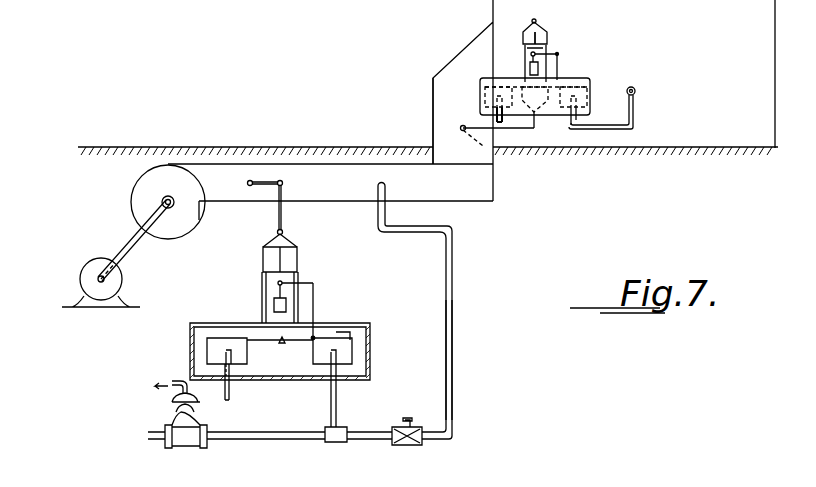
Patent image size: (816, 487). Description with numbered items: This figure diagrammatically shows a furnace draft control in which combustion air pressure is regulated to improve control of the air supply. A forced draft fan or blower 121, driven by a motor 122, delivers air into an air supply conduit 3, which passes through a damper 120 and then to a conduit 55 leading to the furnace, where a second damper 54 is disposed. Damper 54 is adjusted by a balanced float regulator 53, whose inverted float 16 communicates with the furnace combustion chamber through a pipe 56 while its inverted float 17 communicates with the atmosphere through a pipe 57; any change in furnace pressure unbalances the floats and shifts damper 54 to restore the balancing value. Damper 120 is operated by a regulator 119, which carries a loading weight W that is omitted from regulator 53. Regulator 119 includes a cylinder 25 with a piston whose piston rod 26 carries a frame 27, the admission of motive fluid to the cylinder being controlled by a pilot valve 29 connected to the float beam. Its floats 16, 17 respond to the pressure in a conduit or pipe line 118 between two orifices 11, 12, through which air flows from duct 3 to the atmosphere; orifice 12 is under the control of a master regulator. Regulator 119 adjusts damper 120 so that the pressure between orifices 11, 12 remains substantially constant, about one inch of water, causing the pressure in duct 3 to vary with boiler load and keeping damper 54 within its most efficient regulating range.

The air supply conduit 3 is at (357, 193).
The orifice 11 is at (414, 466).
The orifice 12 is at (152, 424).
The inverted float or bell 16 is at (352, 350).
The inverted float or bell 17 is at (207, 345).
The cylinder 25 is at (270, 291).
The piston rod 26 is at (282, 259).
The frame 27 is at (263, 262).
The pilot valve 29 is at (274, 308).
The balanced float regulator 53 is at (594, 60).
The damper 54 is at (445, 122).
The conduit 55 is at (433, 90).
The pipe or conduit 56 is at (634, 106).
The pipe 57 is at (231, 397).
The conduit or pipe line 118 is at (453, 395).
The regulator 119 is at (348, 306).
The damper 120 is at (237, 166).
The forced draft fan or blower 121 is at (112, 209).
The motor 122 is at (58, 294).
The loading weight W is at (349, 332).